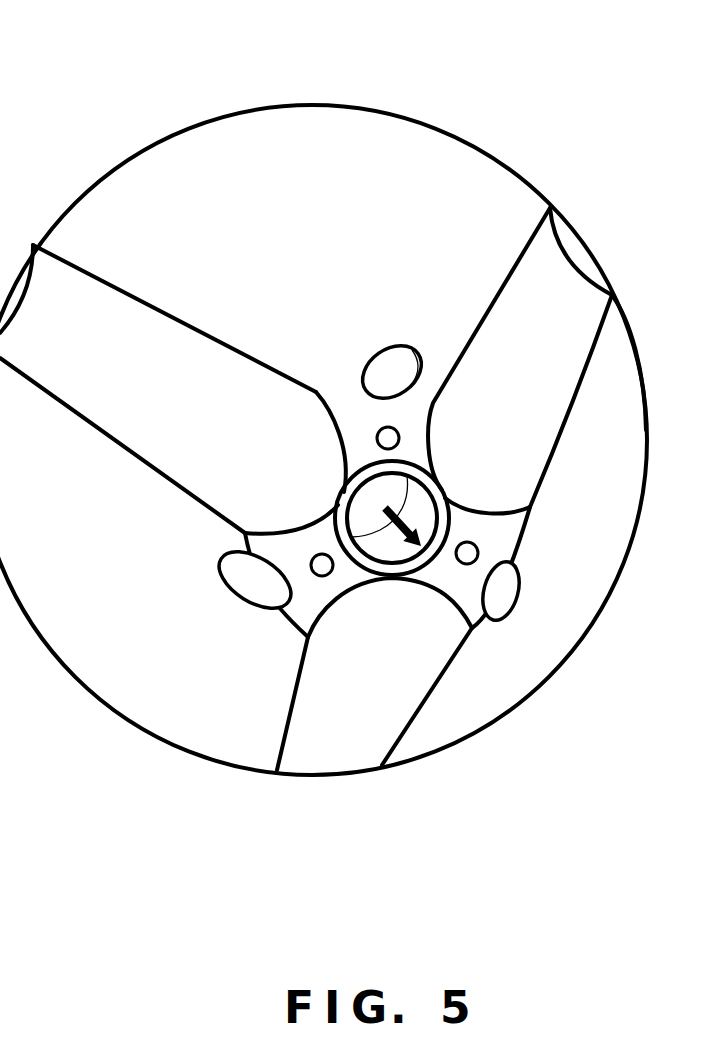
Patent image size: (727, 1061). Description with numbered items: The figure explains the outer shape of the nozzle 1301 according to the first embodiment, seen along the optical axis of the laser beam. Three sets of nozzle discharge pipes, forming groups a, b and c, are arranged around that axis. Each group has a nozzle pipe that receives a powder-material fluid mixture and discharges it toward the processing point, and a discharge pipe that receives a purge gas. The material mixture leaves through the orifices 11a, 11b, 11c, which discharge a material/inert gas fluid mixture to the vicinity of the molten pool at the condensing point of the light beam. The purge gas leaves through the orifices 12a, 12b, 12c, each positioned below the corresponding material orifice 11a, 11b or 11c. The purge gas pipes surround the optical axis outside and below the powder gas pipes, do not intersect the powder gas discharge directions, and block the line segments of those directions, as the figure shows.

The nozzle 1301 is at (104, 104).
The orifice 11a is at (322, 576).
The orifice 11b is at (392, 428).
The orifice 11c is at (467, 564).
The orifice 12a is at (253, 600).
The orifice 12b is at (378, 342).
The orifice 12c is at (500, 590).